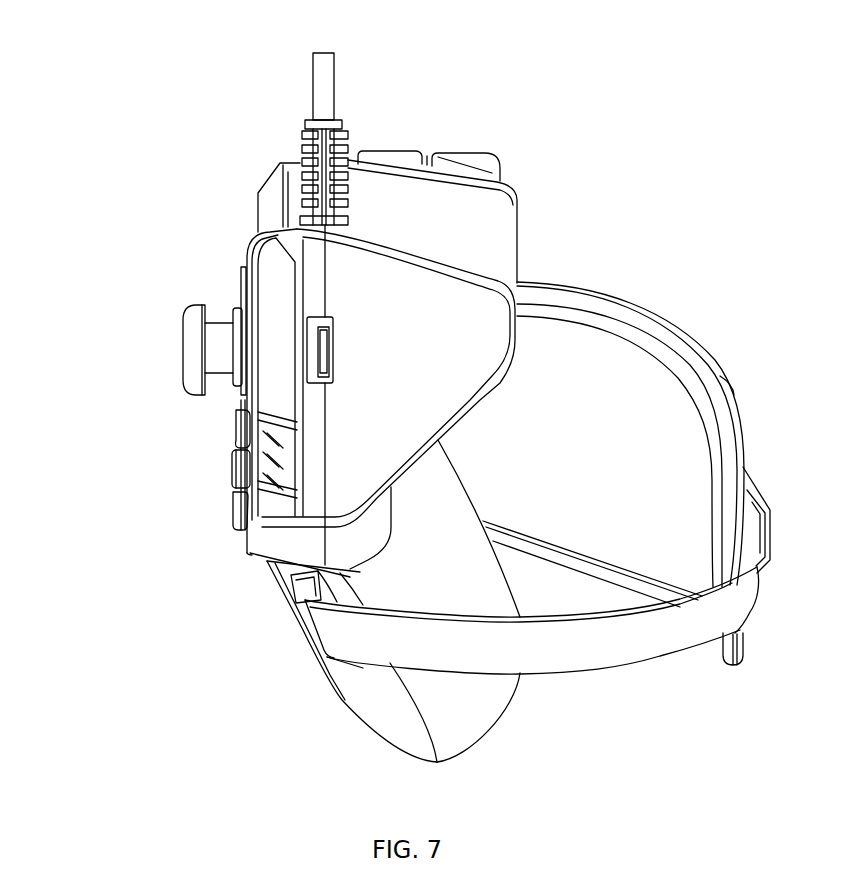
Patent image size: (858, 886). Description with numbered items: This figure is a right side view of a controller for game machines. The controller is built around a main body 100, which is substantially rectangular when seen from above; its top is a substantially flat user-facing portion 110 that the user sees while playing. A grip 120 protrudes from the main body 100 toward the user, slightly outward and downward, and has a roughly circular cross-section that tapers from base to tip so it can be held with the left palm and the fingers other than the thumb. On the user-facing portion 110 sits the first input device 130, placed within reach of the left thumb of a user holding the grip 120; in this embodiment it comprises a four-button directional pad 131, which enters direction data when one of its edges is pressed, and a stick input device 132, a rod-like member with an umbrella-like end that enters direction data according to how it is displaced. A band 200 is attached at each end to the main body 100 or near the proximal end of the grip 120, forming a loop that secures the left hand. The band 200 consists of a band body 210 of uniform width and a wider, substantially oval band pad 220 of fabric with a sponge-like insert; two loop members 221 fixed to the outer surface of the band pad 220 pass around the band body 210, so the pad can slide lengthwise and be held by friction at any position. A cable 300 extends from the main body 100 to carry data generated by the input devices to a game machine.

The main body 100 is at (247, 240).
The user-facing portion 110 is at (240, 297).
The grip 120 is at (485, 728).
The first input device 130 is at (90, 347).
The four-button directional pad 131 is at (235, 470).
The stick input device 132 is at (190, 365).
The band 200 is at (742, 420).
The band body 210 is at (668, 656).
The band pad 220 is at (670, 320).
The loop members 221 is at (767, 527).
The cable 300 is at (334, 92).